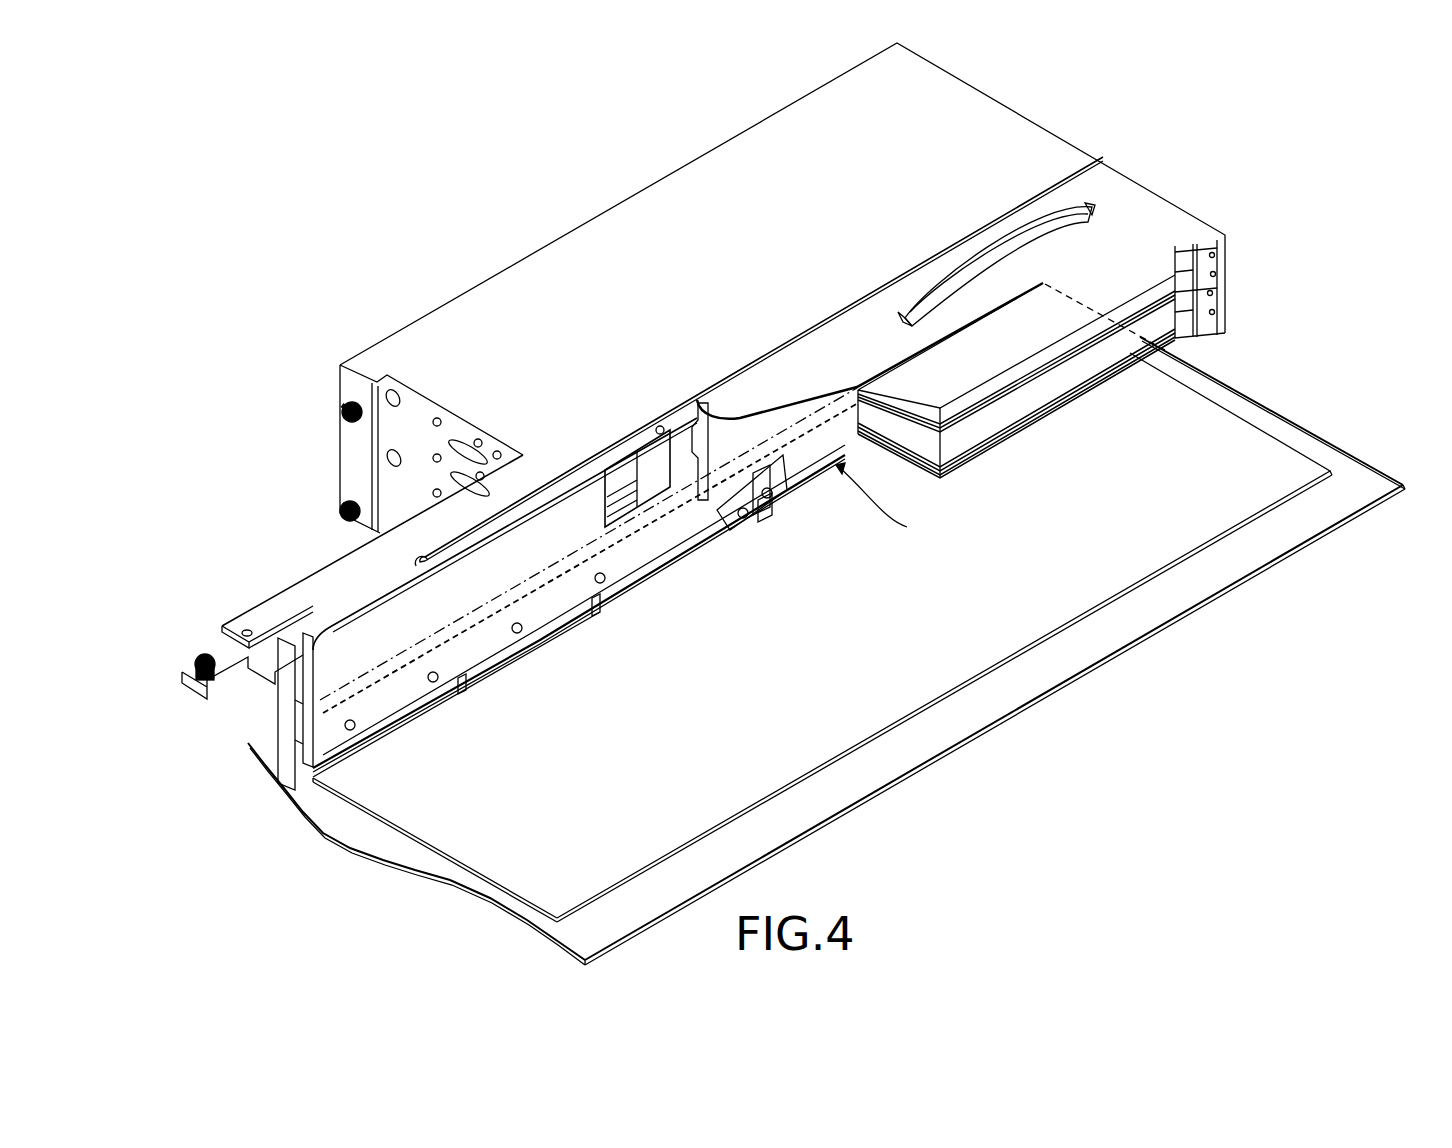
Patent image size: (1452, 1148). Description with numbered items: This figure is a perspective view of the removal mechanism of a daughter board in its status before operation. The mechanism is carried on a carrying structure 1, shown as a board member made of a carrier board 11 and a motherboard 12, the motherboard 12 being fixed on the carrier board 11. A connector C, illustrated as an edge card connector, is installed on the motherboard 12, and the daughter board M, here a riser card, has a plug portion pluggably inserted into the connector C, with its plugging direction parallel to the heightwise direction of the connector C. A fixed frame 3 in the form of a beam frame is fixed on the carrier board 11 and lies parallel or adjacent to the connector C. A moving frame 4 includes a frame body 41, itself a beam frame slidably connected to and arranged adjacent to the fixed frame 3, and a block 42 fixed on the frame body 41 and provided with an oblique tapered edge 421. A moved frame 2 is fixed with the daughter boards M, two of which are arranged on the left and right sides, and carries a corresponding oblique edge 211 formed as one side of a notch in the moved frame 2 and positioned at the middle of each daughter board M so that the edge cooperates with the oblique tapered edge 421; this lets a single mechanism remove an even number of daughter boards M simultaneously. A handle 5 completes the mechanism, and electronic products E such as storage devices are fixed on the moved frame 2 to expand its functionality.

The carrying structure 1 is at (830, 651).
The carrier board 11 is at (1255, 553).
The motherboard 12 is at (1263, 505).
The moved frame 2 is at (645, 178).
The corresponding oblique edge 211 is at (663, 530).
The fixed frame 3 is at (250, 743).
The moving frame 4 is at (585, 582).
The frame body 41 is at (645, 553).
The block 42 is at (743, 527).
The oblique tapered edge 421 is at (804, 527).
The handle 5 is at (222, 668).
The daughter board M is at (710, 440).
The connector C is at (277, 847).
The electronic product E is at (1062, 387).